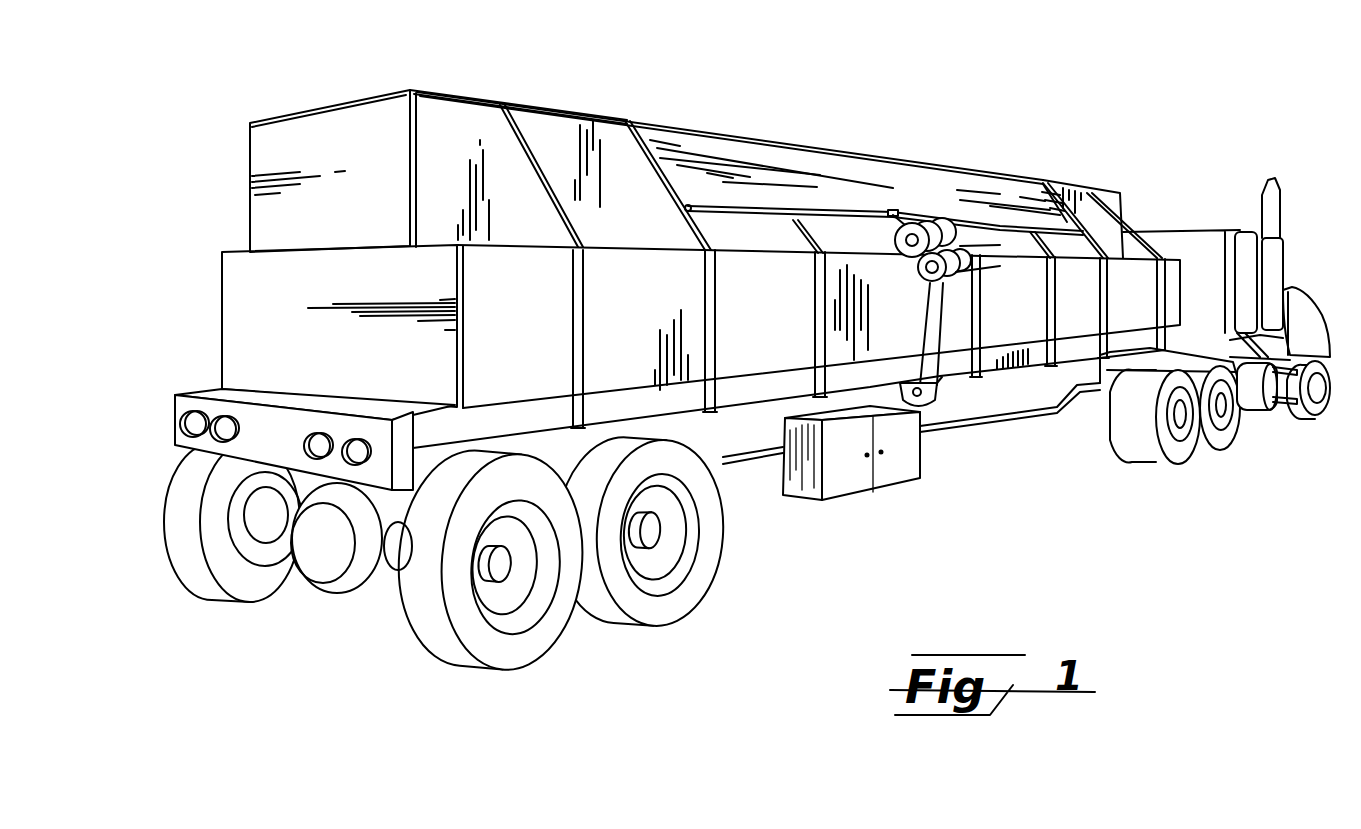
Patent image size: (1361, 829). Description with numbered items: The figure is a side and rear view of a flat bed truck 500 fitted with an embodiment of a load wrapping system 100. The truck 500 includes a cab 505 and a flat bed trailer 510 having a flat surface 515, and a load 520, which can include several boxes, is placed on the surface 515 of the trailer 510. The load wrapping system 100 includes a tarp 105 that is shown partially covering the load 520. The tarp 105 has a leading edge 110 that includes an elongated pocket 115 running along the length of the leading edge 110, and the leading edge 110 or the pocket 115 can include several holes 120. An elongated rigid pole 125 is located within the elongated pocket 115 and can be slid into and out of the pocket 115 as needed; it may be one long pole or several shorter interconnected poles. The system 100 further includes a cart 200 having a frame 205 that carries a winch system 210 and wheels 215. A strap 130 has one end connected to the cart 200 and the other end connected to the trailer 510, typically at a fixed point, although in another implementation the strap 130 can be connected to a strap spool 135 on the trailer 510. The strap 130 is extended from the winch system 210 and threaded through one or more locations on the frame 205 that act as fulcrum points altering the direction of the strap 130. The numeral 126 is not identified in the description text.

The load wrapping system 100 is at (797, 285).
The tarp 105 is at (703, 150).
The leading edge 110 is at (1062, 236).
The elongated pocket 115 is at (958, 232).
The holes 120 is at (940, 222).
The elongated rigid pole 125 is at (688, 207).
The strap fastener 126 is at (892, 212).
The strap 130 is at (942, 377).
The strap spool 135 is at (920, 407).
The cart 200 is at (962, 254).
The frame 205 is at (950, 300).
The winch system 210 is at (975, 240).
The wheels 215 is at (893, 256).
The flat bed truck 500 is at (748, 410).
The cab 505 is at (1315, 332).
The flat bed trailer 510 is at (175, 410).
The flat surface 515 is at (218, 388).
The load 520 is at (250, 214).